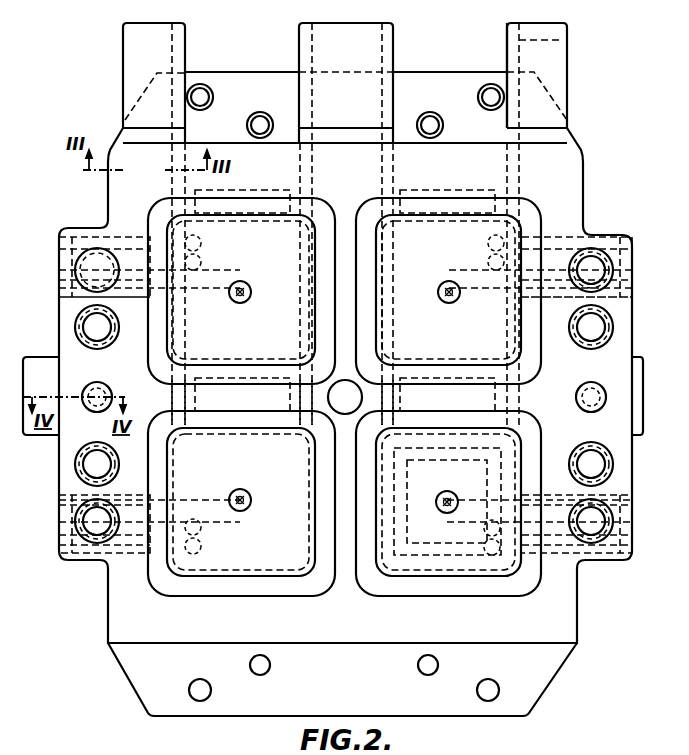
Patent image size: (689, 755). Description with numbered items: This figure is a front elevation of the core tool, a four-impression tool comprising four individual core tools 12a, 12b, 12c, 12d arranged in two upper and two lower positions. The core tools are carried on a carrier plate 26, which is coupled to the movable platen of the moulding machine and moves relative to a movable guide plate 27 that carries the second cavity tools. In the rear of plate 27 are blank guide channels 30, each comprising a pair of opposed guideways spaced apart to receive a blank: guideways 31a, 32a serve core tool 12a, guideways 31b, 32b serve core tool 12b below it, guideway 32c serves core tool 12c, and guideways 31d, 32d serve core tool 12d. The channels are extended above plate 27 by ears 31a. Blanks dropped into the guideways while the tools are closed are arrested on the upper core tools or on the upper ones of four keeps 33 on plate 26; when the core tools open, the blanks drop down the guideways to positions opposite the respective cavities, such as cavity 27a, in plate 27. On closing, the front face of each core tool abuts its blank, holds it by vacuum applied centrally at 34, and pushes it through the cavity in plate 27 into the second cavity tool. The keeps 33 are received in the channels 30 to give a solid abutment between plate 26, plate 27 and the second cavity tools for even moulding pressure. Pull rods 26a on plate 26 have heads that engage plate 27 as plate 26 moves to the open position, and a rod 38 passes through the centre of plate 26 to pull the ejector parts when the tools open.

The core tool 12a is at (292, 266).
The core tool 12b is at (292, 489).
The core tool 12c is at (444, 266).
The core tool 12d is at (470, 484).
The core tool carrier plate 26 is at (447, 83).
The pull rod 26a is at (88, 383).
The movable guide plate 27 is at (562, 172).
The cavity in plate 27 27a is at (556, 70).
The blank guide channel 30 is at (503, 50).
The guideway 31a is at (303, 55).
The guideway 31b is at (300, 395).
The guideway 31d is at (515, 400).
The guideway 32a is at (182, 52).
The guideway 32b is at (186, 395).
The guideway 32c is at (393, 52).
The guideway 32d is at (398, 400).
The keep 33 is at (248, 197).
The vacuum point 34 is at (446, 302).
The rod 38 is at (343, 402).